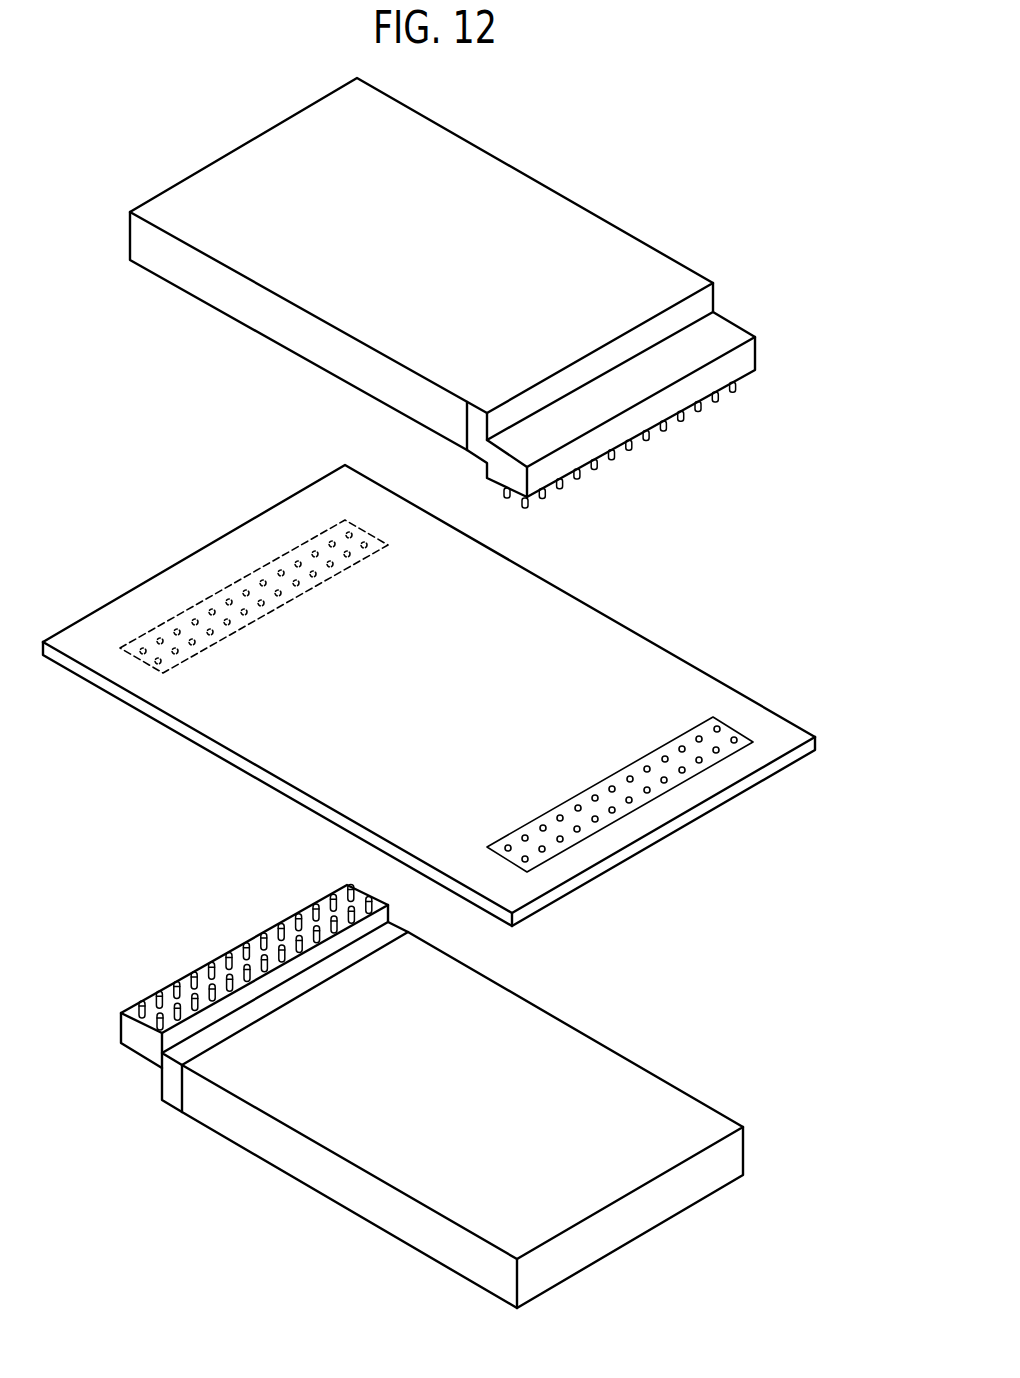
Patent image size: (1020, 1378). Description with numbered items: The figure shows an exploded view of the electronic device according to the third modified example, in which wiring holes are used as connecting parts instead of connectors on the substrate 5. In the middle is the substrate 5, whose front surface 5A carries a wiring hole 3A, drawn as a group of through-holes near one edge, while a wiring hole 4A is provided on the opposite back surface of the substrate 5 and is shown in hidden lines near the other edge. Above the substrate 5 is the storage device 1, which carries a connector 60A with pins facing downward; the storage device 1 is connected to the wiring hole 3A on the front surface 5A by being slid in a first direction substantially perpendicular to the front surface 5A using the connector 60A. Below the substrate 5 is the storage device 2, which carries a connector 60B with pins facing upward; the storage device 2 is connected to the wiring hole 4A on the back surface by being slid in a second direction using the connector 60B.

The storage device 1 is at (594, 191).
The storage device 2 is at (617, 1261).
The substrate 5 is at (774, 784).
The front surface 5A is at (570, 618).
The wiring hole 3A is at (728, 736).
The wiring hole 4A is at (140, 658).
The connector 60A is at (730, 332).
The connector 60B is at (148, 1045).